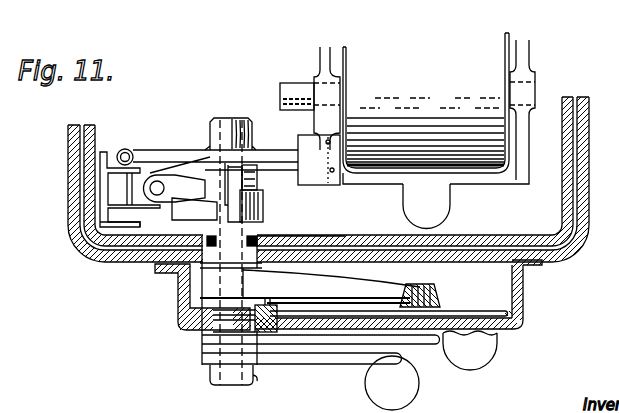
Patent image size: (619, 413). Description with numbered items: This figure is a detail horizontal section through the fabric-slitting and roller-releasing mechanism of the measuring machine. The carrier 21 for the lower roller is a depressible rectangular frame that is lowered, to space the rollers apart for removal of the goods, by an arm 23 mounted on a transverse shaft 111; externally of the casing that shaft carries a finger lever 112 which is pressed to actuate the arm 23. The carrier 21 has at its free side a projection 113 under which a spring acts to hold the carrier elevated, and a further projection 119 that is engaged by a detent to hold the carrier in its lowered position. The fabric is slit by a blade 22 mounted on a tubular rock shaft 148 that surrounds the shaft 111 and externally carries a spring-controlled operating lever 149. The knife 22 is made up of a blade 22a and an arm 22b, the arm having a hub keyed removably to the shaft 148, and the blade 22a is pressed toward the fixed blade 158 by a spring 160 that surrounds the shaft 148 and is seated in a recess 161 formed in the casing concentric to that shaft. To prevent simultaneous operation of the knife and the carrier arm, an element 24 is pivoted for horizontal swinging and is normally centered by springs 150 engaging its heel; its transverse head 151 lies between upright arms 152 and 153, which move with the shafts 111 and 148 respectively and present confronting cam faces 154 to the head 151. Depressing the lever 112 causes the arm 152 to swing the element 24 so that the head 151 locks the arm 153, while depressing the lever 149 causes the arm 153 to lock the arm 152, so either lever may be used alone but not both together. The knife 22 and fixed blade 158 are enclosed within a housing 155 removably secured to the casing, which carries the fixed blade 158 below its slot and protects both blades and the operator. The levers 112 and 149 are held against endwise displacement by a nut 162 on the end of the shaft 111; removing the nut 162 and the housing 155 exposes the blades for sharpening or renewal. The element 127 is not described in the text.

The carrier 21 is at (320, 74).
The blade 22 is at (397, 284).
The blade 22a is at (257, 272).
The arm 22b is at (331, 277).
The arm 23 is at (278, 150).
The element 24 is at (192, 168).
The transverse shaft 111 is at (261, 210).
The operating lever 112 is at (275, 363).
The projection 113 is at (447, 211).
The projection 119 is at (322, 182).
The heating element 127 is at (282, 88).
The tubular rock shaft 148 is at (187, 274).
The operating lever 149 is at (428, 347).
The springs 150 is at (126, 170).
The transverse head 151 is at (250, 177).
The upright arm 152 is at (180, 158).
The upright arm 153 is at (142, 232).
The cam faces 154 is at (240, 165).
The housing 155 is at (523, 283).
The fixed blade 158 is at (522, 300).
The spring 160 is at (288, 239).
The recess 161 is at (331, 233).
The nut 162 is at (246, 389).